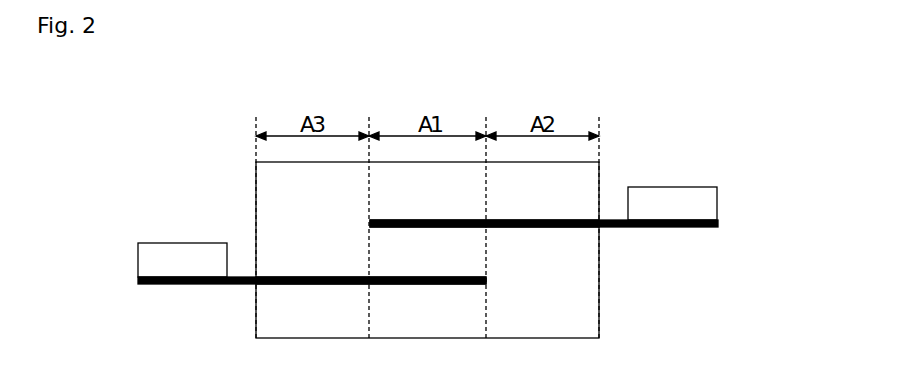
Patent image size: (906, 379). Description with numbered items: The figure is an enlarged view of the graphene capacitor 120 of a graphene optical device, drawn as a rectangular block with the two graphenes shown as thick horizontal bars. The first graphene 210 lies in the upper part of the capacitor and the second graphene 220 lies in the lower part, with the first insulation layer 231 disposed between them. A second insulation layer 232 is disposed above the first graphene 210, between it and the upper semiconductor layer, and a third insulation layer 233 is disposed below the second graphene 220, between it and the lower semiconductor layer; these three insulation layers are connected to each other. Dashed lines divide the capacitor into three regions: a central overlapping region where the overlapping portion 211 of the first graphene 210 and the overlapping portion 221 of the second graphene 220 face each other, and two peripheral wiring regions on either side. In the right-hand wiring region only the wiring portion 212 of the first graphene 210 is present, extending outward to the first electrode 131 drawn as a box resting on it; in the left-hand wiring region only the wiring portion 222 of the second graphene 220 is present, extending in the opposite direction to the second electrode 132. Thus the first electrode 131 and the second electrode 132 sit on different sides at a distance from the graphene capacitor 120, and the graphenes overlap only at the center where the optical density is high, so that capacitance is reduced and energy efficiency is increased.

The graphene capacitor 120 is at (601, 320).
The first electrode 131 is at (697, 202).
The second electrode 132 is at (152, 262).
The first graphene 210 is at (500, 215).
The overlapping portion of the first graphene 211 is at (430, 220).
The wiring portion of the first graphene 212 is at (563, 220).
The second graphene 220 is at (268, 287).
The overlapping portion of the second graphene 221 is at (431, 284).
The wiring portion of the second graphene 222 is at (315, 285).
The first insulation layer 231 is at (387, 241).
The second insulation layer 232 is at (387, 191).
The third insulation layer 233 is at (472, 307).